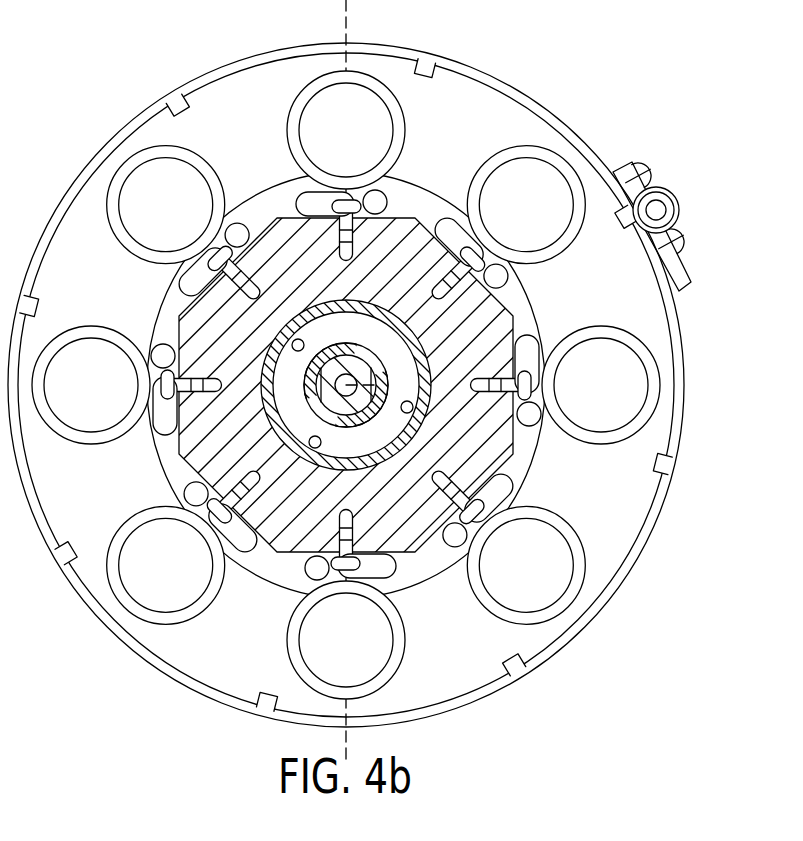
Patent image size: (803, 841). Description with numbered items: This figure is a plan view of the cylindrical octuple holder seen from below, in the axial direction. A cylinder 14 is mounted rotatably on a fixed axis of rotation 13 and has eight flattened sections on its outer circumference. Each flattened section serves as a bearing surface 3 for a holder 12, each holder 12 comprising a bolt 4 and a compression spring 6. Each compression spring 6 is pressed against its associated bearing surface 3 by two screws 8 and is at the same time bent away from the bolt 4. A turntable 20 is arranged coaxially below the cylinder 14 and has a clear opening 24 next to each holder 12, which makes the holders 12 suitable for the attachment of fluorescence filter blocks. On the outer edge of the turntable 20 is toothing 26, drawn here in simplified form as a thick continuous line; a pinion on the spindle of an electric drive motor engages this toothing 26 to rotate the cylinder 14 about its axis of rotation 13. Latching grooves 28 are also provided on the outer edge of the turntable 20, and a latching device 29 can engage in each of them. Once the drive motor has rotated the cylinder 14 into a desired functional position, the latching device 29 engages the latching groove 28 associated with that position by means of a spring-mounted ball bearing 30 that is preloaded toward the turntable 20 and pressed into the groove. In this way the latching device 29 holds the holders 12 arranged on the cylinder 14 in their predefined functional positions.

The bearing surface 3 is at (541, 447).
The bolt 4 is at (627, 418).
The compression spring 6 is at (621, 364).
The screws 8 is at (623, 386).
The holder 12 is at (629, 386).
The axis of rotation 13 is at (390, 372).
The cylinder 14 is at (182, 318).
The turntable 20 is at (503, 107).
The clear opening 24 is at (492, 602).
The toothing 26 is at (263, 52).
The latching grooves 28 is at (428, 62).
The latching device 29 is at (635, 165).
The spring-mounted ball bearing 30 is at (671, 192).